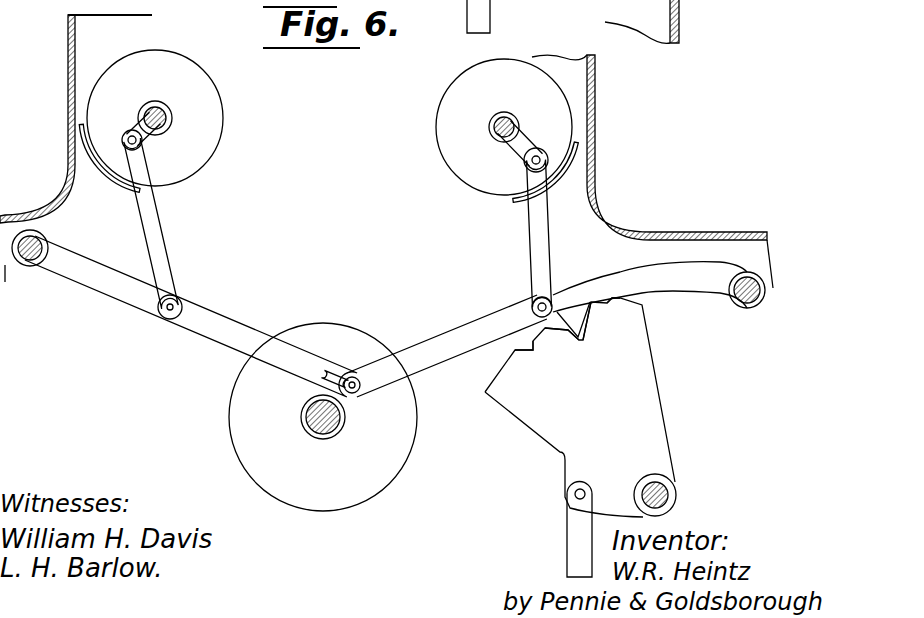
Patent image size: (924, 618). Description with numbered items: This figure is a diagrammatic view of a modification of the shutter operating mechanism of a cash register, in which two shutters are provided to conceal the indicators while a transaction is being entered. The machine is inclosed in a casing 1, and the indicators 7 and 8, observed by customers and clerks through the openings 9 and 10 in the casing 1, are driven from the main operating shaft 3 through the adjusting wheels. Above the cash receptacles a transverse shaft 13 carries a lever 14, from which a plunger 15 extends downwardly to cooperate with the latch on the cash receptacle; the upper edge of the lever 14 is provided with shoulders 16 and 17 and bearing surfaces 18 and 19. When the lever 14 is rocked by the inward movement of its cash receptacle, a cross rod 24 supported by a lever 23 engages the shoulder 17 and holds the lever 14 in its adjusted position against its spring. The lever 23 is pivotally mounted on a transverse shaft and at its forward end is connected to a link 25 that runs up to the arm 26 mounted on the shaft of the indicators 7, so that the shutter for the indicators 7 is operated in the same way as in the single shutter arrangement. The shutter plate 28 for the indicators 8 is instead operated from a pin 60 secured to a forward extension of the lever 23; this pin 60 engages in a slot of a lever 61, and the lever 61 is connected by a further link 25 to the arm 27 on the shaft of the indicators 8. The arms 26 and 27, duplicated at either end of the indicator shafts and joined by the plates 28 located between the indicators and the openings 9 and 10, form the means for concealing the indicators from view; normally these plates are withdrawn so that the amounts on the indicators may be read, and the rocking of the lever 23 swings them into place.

The casing 1 is at (68, 71).
The main operating shaft 3 is at (320, 428).
The indicators 7 is at (452, 145).
The indicators 8 is at (213, 133).
The opening 9 is at (595, 128).
The opening 10 is at (68, 118).
The transverse shaft 13 is at (669, 500).
The lever 14 is at (660, 413).
The plunger 15 is at (490, 10).
The shoulder 16 is at (570, 332).
The shoulder 17 is at (523, 357).
The bearing surface 18 is at (628, 307).
The bearing surface 19 is at (581, 338).
The lever 23 is at (690, 290).
The cross rod 24 is at (578, 305).
The link 25 is at (163, 256).
The arm 26 is at (526, 146).
The arm 27 is at (108, 148).
The plate 28 is at (108, 168).
The pin 60 is at (356, 378).
The lever 61 is at (215, 332).